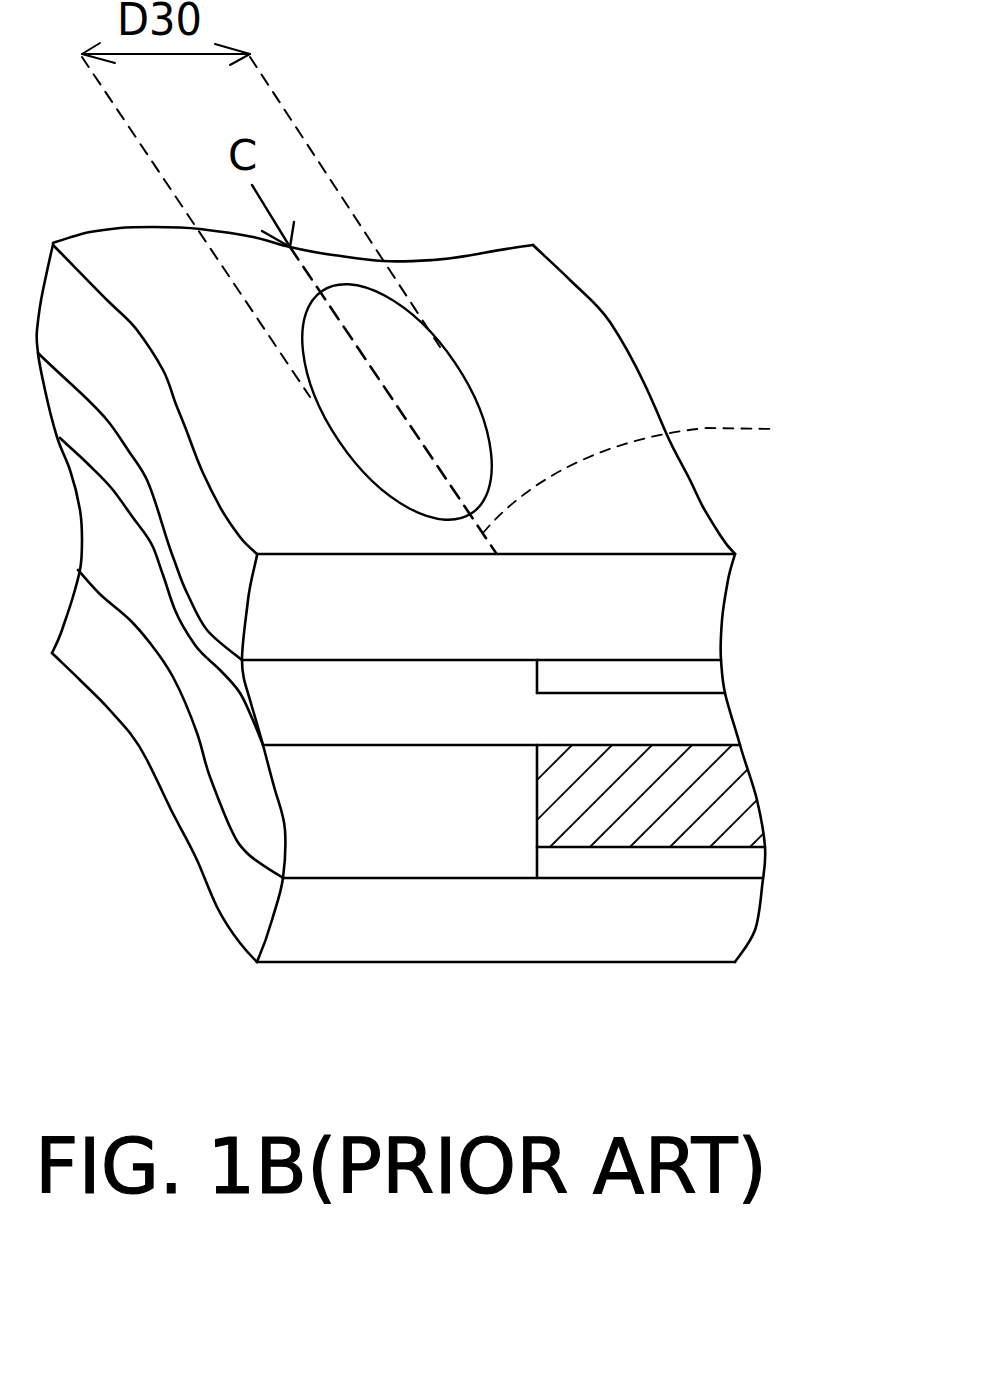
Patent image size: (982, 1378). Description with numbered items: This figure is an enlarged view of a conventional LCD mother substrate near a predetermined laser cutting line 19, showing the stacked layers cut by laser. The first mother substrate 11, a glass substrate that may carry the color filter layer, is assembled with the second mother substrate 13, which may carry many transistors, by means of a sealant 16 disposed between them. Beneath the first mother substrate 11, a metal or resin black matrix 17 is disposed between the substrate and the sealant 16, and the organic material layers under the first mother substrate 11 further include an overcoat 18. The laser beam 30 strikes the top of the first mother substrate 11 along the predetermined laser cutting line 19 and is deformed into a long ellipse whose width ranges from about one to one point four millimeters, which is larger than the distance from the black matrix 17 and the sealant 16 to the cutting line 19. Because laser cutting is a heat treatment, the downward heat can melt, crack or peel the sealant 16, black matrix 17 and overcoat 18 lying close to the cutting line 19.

The first mother substrate 11 is at (562, 607).
The second mother substrate 13 is at (569, 920).
The sealant 16 is at (676, 811).
The black matrix 17 is at (709, 674).
The overcoat 18 is at (572, 726).
The predetermined laser cutting line 19 is at (659, 468).
The laser beam 30 is at (460, 430).